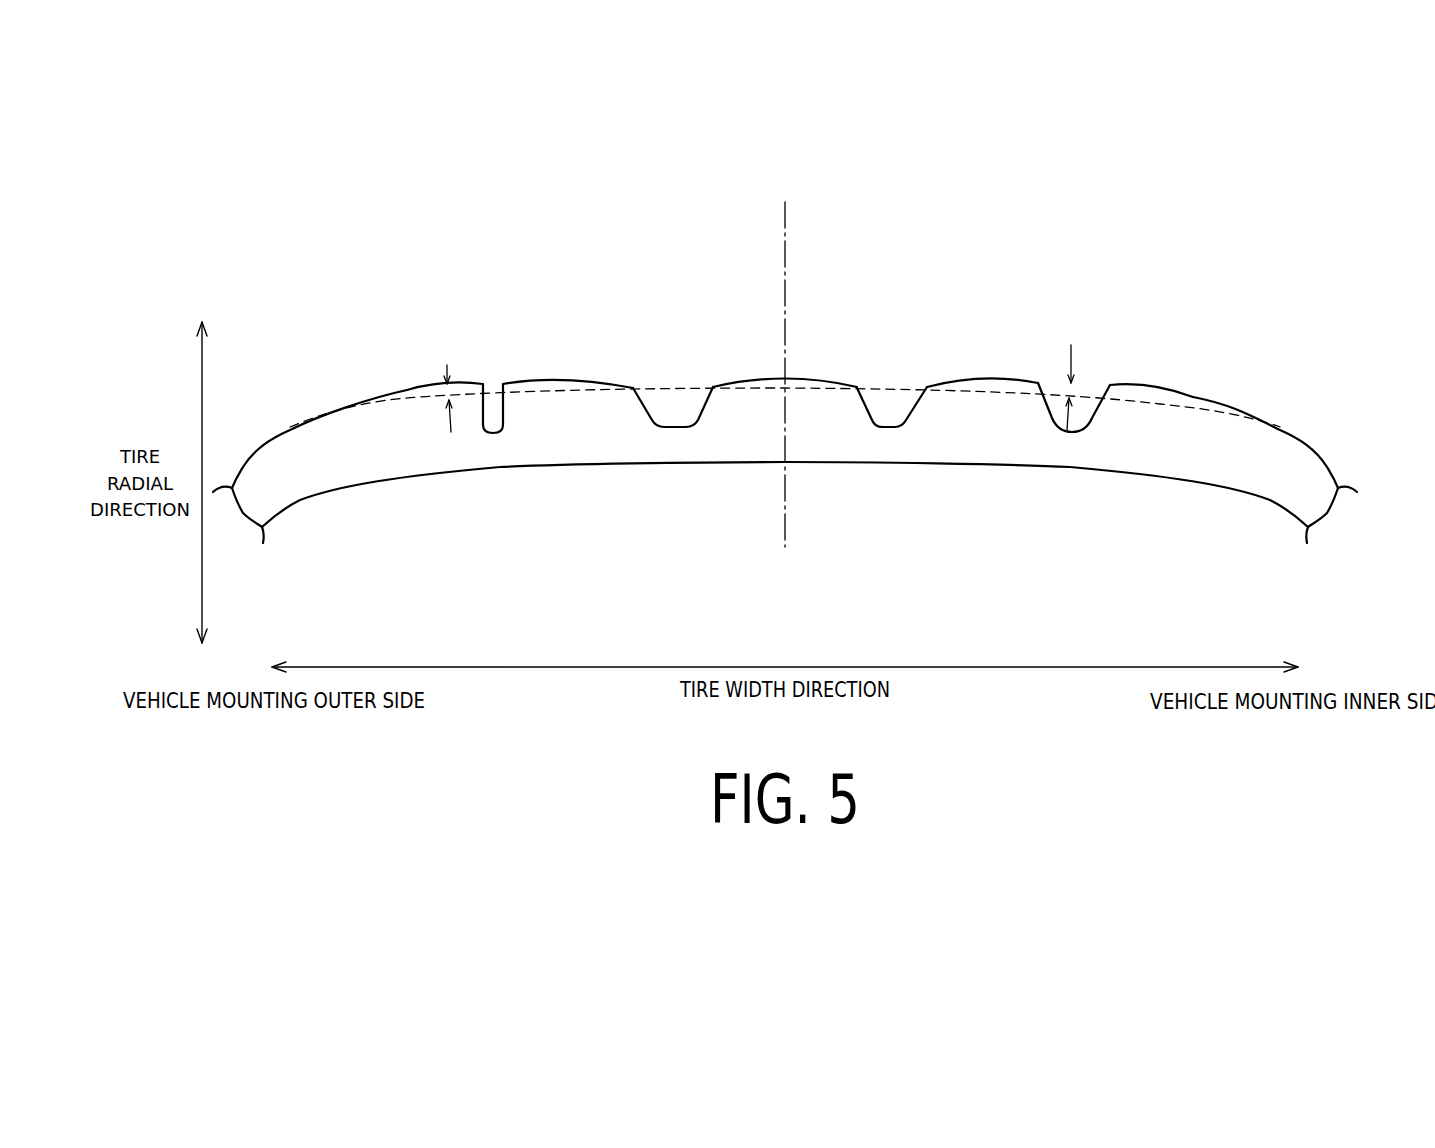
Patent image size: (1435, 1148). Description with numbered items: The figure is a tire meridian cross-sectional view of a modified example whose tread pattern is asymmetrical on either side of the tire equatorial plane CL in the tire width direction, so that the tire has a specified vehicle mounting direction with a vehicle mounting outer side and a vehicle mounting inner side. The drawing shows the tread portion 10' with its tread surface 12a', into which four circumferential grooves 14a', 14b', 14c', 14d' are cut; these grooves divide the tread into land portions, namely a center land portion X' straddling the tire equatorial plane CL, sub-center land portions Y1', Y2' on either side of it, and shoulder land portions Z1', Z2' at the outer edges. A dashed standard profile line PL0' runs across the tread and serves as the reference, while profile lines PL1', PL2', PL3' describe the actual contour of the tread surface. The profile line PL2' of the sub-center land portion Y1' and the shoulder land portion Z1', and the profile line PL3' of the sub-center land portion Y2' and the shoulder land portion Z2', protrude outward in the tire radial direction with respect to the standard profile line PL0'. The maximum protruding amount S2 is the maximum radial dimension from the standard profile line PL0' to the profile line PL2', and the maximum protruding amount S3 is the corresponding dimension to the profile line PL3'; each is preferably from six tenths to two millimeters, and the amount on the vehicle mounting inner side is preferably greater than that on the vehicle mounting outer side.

The tread portion 10' is at (785, 368).
The tire equatorial plane CL is at (784, 358).
The tread surface 12a' is at (561, 329).
The circumferential groove 14a' is at (673, 363).
The circumferential groove 14b' is at (892, 363).
The circumferential groove 14c' is at (488, 345).
The circumferential groove 14d' is at (1087, 345).
The standard profile line PL0' is at (785, 357).
The profile line PL1' is at (840, 329).
The profile line PL2' is at (402, 338).
The profile line PL3' is at (990, 330).
The maximum protruding amount S2 is at (451, 412).
The maximum protruding amount S3 is at (1059, 382).
The land portion X' is at (785, 483).
The sub-center land portion Y1' is at (568, 474).
The sub-center land portion Y2' is at (988, 473).
The shoulder land portion Z1' is at (425, 482).
The shoulder land portion Z2' is at (1181, 483).